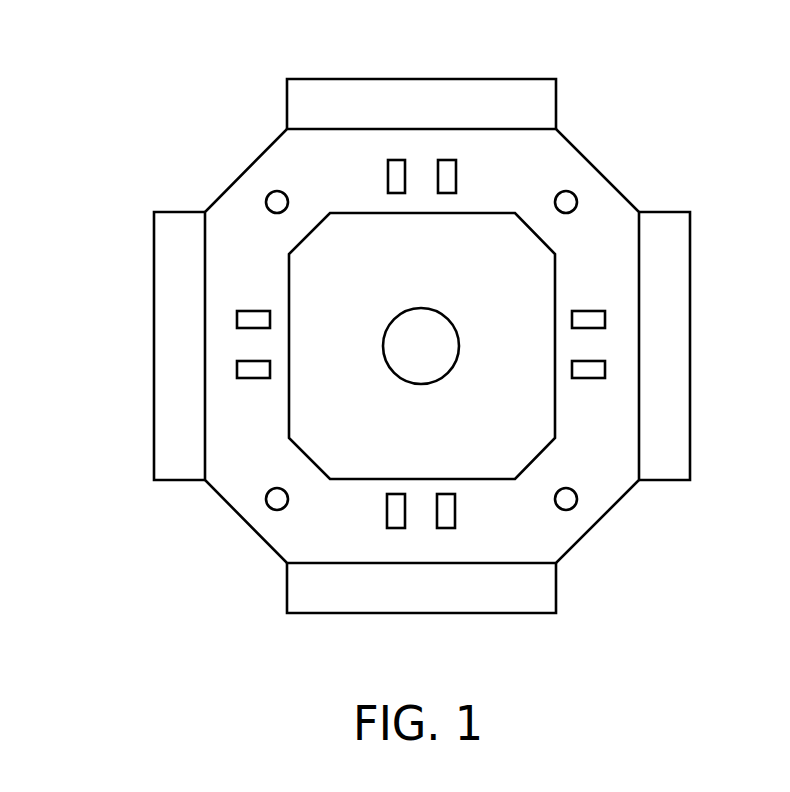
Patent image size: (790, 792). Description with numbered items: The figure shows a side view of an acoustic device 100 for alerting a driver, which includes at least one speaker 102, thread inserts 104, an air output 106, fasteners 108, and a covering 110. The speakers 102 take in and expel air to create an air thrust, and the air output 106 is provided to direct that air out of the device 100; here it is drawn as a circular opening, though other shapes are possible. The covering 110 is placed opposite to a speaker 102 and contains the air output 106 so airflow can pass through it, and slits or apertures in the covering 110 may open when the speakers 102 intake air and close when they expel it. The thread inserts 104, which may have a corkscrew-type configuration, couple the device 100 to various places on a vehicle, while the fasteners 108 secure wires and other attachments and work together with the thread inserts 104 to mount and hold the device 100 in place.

The device 100 is at (309, 150).
The speaker 102 is at (154, 250).
The thread insert 104 is at (266, 499).
The air output 106 is at (432, 322).
The fastener 108 is at (456, 171).
The covering 110 is at (513, 440).